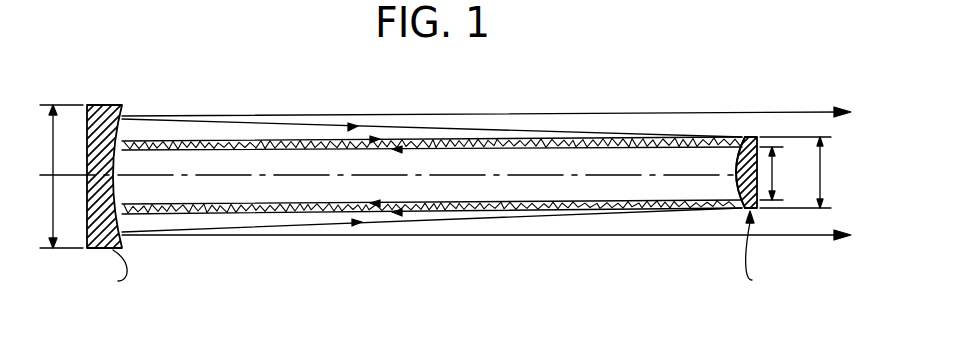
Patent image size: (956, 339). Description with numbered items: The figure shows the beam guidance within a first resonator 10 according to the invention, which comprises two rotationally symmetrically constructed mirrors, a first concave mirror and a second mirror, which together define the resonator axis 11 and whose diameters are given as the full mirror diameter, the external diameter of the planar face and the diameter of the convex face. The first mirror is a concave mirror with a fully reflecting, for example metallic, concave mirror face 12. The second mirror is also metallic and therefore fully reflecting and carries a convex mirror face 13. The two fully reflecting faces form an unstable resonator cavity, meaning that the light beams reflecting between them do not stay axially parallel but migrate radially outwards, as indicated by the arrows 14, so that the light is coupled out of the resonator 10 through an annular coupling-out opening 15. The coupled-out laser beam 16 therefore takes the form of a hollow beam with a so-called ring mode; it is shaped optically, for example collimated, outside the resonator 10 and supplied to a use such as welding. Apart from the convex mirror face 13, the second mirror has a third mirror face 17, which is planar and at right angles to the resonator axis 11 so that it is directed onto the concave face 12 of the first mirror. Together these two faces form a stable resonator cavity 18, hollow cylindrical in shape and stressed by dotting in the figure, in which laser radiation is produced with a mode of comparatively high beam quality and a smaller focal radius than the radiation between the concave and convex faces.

The resonator 10 is at (268, 258).
The resonator axis 11 is at (220, 178).
The concave mirror face 12 is at (121, 104).
The convex mirror face 13 is at (725, 138).
The arrows 14 is at (351, 127).
The annular coupling-out opening 15 is at (753, 120).
The coupled-out laser beam 16 is at (848, 108).
The third mirror face 17 is at (740, 211).
The stable resonator cavity 18 is at (443, 211).